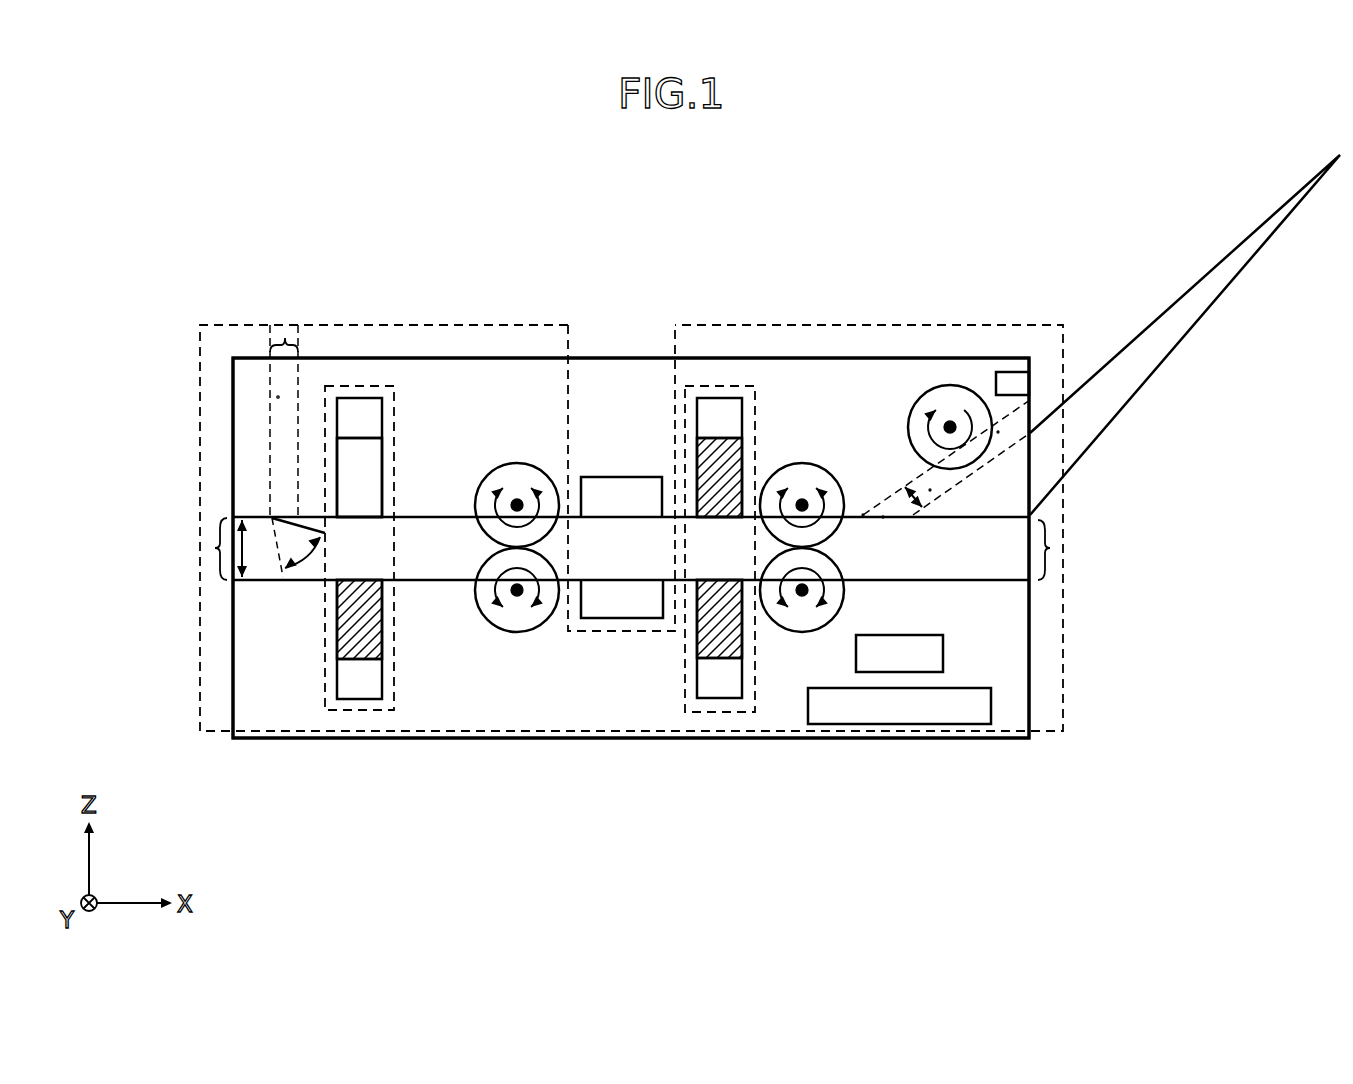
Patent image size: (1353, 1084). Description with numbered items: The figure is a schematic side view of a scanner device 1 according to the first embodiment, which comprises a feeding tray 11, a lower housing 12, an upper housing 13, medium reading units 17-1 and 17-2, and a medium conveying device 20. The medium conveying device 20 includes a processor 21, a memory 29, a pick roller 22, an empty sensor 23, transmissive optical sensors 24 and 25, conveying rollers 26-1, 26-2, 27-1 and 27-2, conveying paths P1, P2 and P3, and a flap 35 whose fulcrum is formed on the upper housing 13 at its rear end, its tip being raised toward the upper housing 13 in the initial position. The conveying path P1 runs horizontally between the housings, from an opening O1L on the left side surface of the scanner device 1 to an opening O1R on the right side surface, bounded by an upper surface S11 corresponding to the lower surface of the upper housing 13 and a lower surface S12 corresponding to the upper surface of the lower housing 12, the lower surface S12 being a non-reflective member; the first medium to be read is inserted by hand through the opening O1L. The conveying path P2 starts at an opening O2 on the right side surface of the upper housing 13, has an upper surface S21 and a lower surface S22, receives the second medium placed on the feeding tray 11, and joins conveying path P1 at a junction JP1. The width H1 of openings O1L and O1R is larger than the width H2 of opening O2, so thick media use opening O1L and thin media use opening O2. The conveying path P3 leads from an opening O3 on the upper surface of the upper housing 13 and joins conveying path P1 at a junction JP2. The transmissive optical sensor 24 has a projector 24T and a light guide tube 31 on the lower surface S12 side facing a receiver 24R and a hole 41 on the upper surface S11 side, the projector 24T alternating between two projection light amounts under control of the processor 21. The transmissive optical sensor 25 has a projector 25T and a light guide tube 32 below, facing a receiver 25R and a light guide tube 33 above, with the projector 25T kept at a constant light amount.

The scanner device 1 is at (639, 213).
The feeding tray 11 is at (1275, 213).
The lower housing 12 is at (1015, 703).
The upper housing 13 is at (600, 372).
The medium reading unit 17-1 is at (622, 485).
The medium reading unit 17-2 is at (622, 608).
The medium conveying device 20 is at (200, 346).
The processor 21 is at (907, 713).
The pick roller 22 is at (950, 393).
The empty sensor 23 is at (1013, 382).
The transmissive optical sensor 24 is at (372, 712).
The receiver 24R is at (362, 417).
The projector 24T is at (360, 680).
The transmissive optical sensor 25 is at (733, 712).
The receiver 25R is at (720, 417).
The projector 25T is at (720, 680).
The conveying roller 26-1 is at (520, 467).
The conveying roller 26-2 is at (517, 620).
The conveying roller 27-1 is at (802, 473).
The conveying roller 27-2 is at (802, 632).
The memory 29 is at (933, 653).
The light guide tube 31 is at (383, 630).
The light guide tube 32 is at (742, 630).
The light guide tube 33 is at (730, 467).
The flap 35 is at (326, 534).
The hole 41 is at (367, 467).
The width of openings O1L and O1R in the height direction H1 is at (245, 552).
The width of opening O2 in the height direction H2 is at (905, 487).
The junction JP1 is at (883, 517).
The junction JP2 is at (285, 517).
The opening O1L is at (215, 548).
The opening O1R is at (1050, 548).
The opening O2 is at (1062, 406).
The opening O3 is at (285, 338).
The conveying path P1 is at (427, 540).
The conveying path P2 is at (998, 432).
The conveying path P3 is at (278, 397).
The upper surface S11 is at (460, 583).
The lower surface S12 is at (460, 583).
The upper surface S21 is at (863, 515).
The lower surface S22 is at (930, 490).